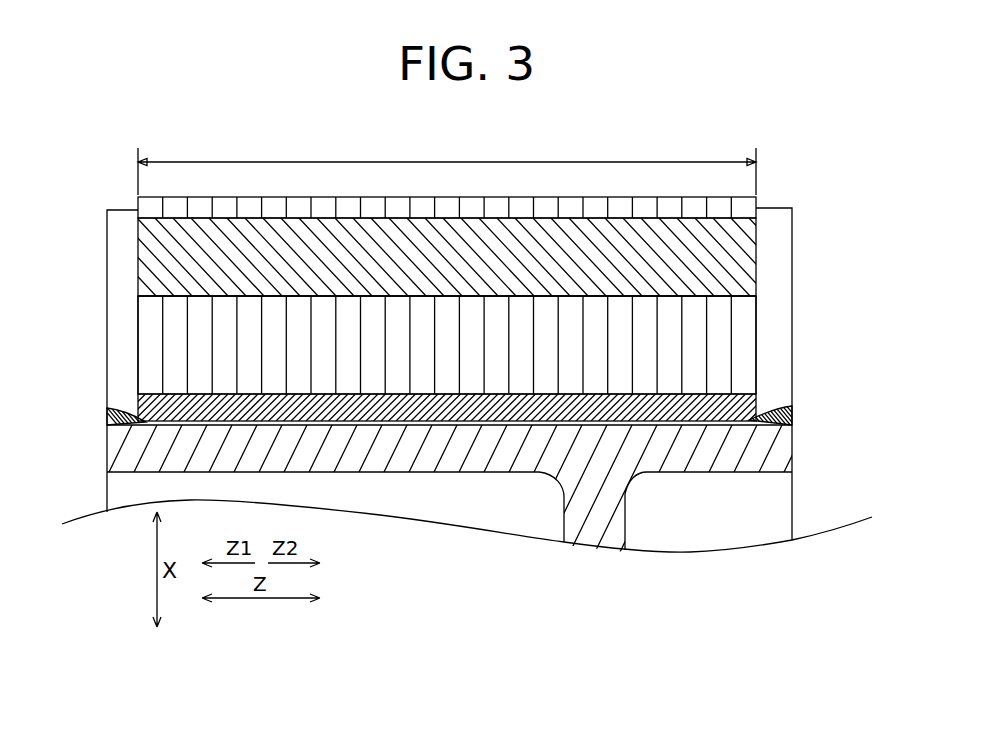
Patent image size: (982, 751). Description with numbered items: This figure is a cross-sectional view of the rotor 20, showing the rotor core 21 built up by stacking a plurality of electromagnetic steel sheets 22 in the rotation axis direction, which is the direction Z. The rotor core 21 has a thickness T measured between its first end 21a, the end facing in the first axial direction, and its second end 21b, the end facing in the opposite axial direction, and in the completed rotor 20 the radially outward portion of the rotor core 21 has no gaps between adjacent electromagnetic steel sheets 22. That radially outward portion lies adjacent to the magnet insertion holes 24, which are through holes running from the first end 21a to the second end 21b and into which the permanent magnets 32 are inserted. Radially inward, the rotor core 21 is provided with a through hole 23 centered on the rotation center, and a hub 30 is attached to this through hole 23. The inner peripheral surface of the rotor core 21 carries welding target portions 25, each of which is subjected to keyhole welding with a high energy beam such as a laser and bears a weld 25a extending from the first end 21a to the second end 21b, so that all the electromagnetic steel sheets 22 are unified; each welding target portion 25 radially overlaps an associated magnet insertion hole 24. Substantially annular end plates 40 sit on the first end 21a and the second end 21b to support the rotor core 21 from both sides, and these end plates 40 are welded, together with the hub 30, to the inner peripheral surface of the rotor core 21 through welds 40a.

The rotor 20 is at (744, 130).
The permanent magnet 32 is at (757, 236).
The magnet insertion hole 24 is at (718, 290).
The rotor core 21 is at (766, 312).
The electromagnetic steel sheet 22 is at (447, 345).
The first end 21a is at (138, 372).
The second end 21b is at (757, 367).
The welding target portion 25 is at (452, 406).
The weld 25a is at (447, 407).
The through hole 23 is at (695, 422).
The end plate 40 is at (113, 338).
The weld 40a is at (107, 420).
The hub 30 is at (607, 535).